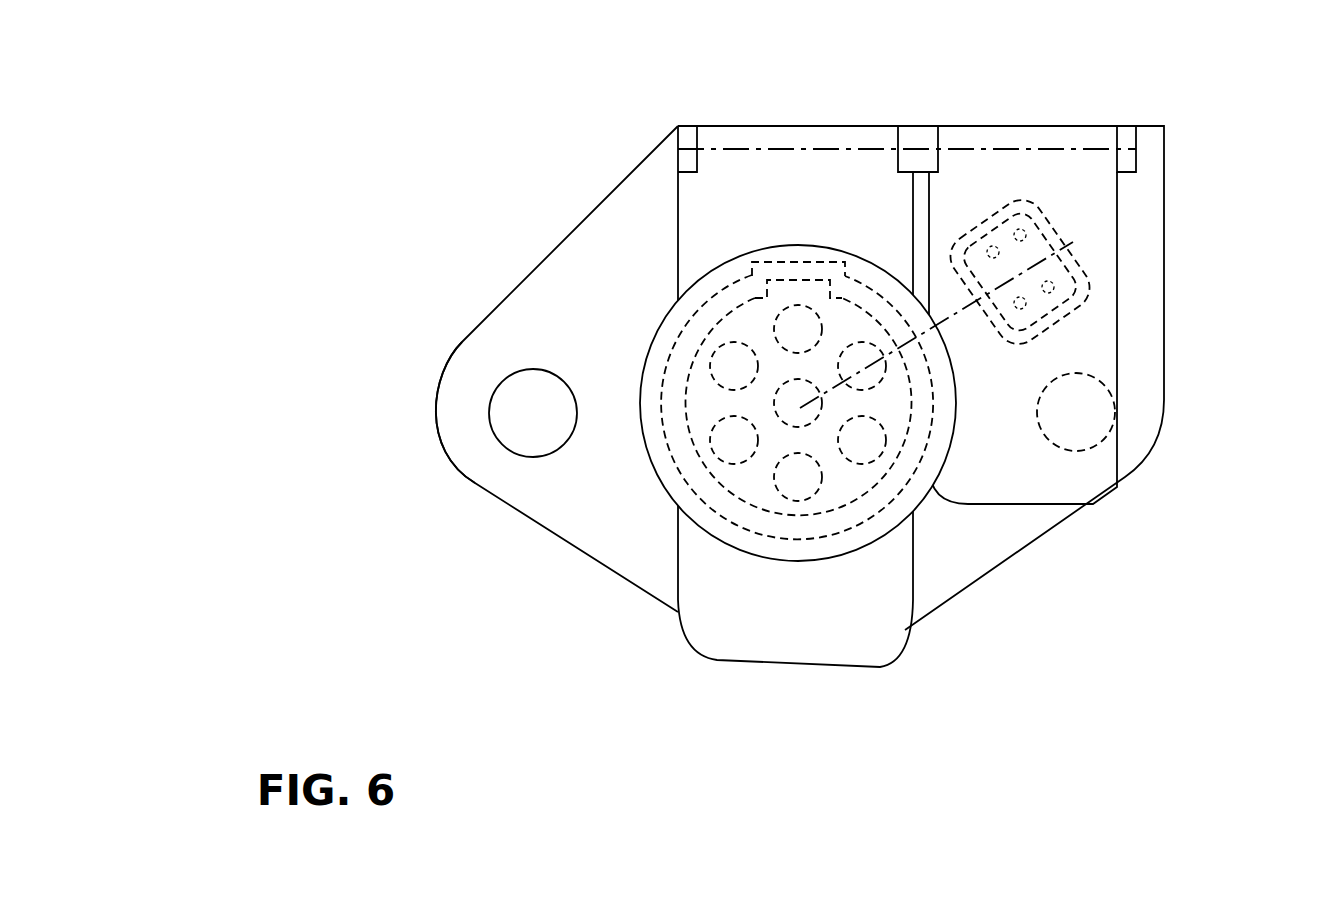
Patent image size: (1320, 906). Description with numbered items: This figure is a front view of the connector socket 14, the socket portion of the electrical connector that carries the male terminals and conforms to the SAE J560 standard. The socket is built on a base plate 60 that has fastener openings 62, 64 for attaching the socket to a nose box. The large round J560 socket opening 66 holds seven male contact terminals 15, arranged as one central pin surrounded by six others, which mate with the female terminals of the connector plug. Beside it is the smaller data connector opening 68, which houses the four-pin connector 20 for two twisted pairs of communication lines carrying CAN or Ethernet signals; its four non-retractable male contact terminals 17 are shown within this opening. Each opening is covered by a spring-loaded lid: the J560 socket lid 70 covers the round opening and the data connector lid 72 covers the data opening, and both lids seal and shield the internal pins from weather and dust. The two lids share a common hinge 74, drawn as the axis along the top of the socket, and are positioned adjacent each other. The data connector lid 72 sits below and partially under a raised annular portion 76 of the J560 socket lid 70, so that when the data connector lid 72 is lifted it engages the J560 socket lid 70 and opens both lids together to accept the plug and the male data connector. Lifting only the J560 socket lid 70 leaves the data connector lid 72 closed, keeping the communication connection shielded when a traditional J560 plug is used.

The connector socket 14 is at (785, 120).
The male contact terminals 15 is at (798, 502).
The non-retractable male contact terminals 17 is at (1020, 303).
The four-pin connector 20 is at (1087, 303).
The base plate 60 is at (572, 307).
The fastener opening 62 is at (535, 457).
The fastener opening 64 is at (1092, 450).
The J560 socket opening 66 is at (691, 470).
The data connector opening 68 is at (1067, 277).
The J560 socket lid 70 is at (783, 619).
The data connector lid 72 is at (1007, 466).
The common hinge 74 is at (1034, 149).
The raised annular portion 76 is at (930, 503).